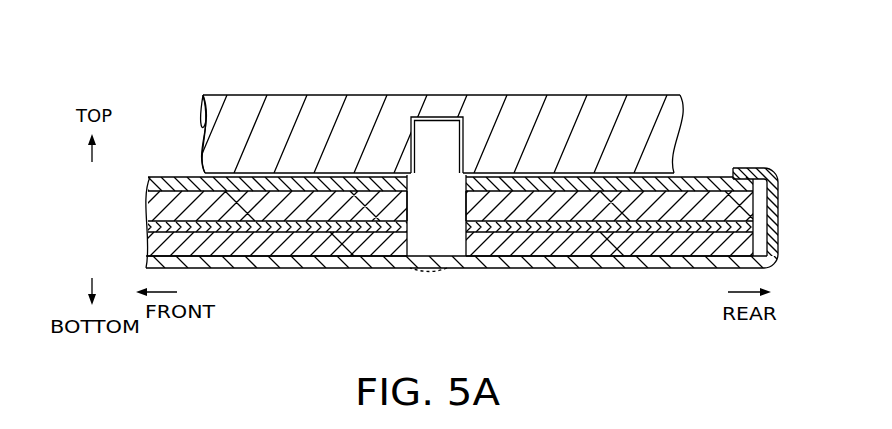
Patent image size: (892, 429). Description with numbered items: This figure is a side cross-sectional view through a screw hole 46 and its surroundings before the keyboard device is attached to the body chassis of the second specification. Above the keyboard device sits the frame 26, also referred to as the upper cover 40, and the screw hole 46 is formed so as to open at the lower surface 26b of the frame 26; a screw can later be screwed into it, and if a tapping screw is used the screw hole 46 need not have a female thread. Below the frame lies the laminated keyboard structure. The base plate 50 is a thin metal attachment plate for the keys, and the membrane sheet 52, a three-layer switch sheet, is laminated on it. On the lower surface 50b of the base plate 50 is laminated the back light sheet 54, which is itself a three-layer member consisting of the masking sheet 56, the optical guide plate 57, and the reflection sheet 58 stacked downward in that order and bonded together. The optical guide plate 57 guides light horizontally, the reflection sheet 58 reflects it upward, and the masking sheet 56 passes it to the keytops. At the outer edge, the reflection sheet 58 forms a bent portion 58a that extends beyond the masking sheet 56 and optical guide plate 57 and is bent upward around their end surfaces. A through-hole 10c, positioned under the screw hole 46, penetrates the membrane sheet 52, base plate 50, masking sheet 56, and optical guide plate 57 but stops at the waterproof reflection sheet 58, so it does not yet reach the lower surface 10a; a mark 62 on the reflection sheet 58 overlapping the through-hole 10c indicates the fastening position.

The lower surface 10a is at (645, 268).
The through-hole 10c is at (432, 222).
The frame 26 is at (618, 102).
The lower surface 26b is at (673, 173).
The upper cover 40 is at (272, 94).
The screw hole 46 is at (459, 152).
The base plate 50 is at (745, 203).
The lower surface 50b is at (254, 222).
The membrane sheet 52 is at (743, 186).
The back light sheet 54 is at (70, 185).
The masking sheet 56 is at (146, 206).
The optical guide plate 57 is at (147, 228).
The reflection sheet 58 is at (147, 245).
The bent portion 58a is at (755, 167).
The mark 62 is at (447, 268).